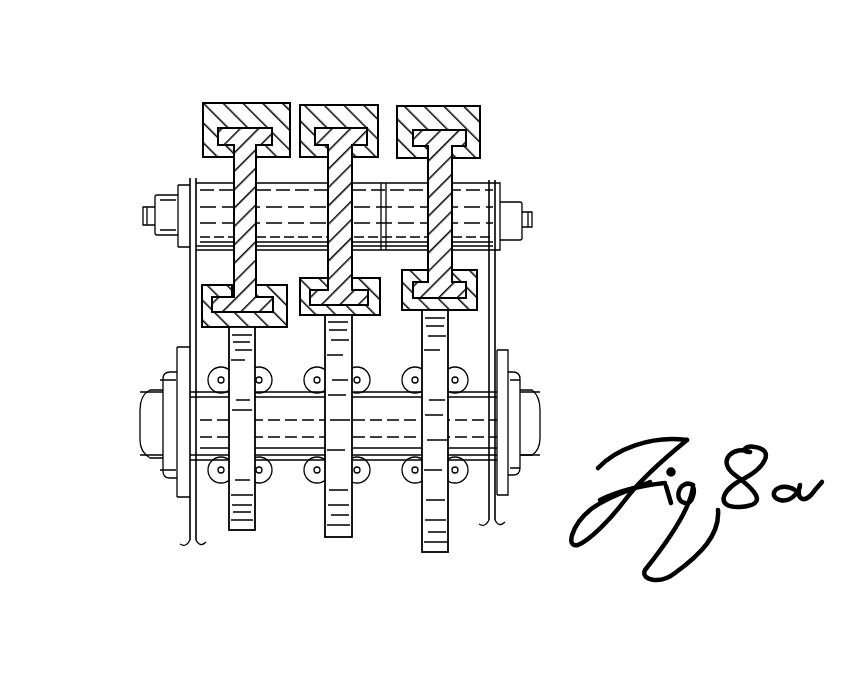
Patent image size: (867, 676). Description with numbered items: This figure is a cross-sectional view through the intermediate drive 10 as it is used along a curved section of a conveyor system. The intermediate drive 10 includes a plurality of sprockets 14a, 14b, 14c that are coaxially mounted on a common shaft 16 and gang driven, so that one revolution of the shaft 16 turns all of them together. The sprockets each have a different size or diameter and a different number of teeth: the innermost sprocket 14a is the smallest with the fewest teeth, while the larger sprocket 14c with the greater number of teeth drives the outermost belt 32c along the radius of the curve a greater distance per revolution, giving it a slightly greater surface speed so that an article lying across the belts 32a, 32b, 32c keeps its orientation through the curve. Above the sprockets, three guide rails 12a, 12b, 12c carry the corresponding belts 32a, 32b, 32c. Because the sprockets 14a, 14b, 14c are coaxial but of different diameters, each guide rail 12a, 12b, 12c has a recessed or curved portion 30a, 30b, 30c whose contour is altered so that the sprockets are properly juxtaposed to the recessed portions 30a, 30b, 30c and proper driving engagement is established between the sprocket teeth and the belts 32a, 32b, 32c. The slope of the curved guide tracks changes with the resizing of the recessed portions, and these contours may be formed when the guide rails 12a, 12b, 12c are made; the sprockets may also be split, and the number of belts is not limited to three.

The intermediate drive 10 is at (337, 361).
The guide rail 12a is at (242, 178).
The guide rail 12b is at (335, 264).
The guide rail 12c is at (496, 214).
The sprocket 14a is at (248, 530).
The sprocket 14b is at (345, 537).
The sprocket 14c is at (440, 555).
The shaft 16 is at (540, 410).
The recessed portion 30a is at (510, 295).
The recessed portion 30b is at (522, 296).
The recessed portion 30c is at (596, 290).
The belt 32a is at (243, 115).
The belt 32b is at (335, 115).
The belt 32c is at (447, 113).